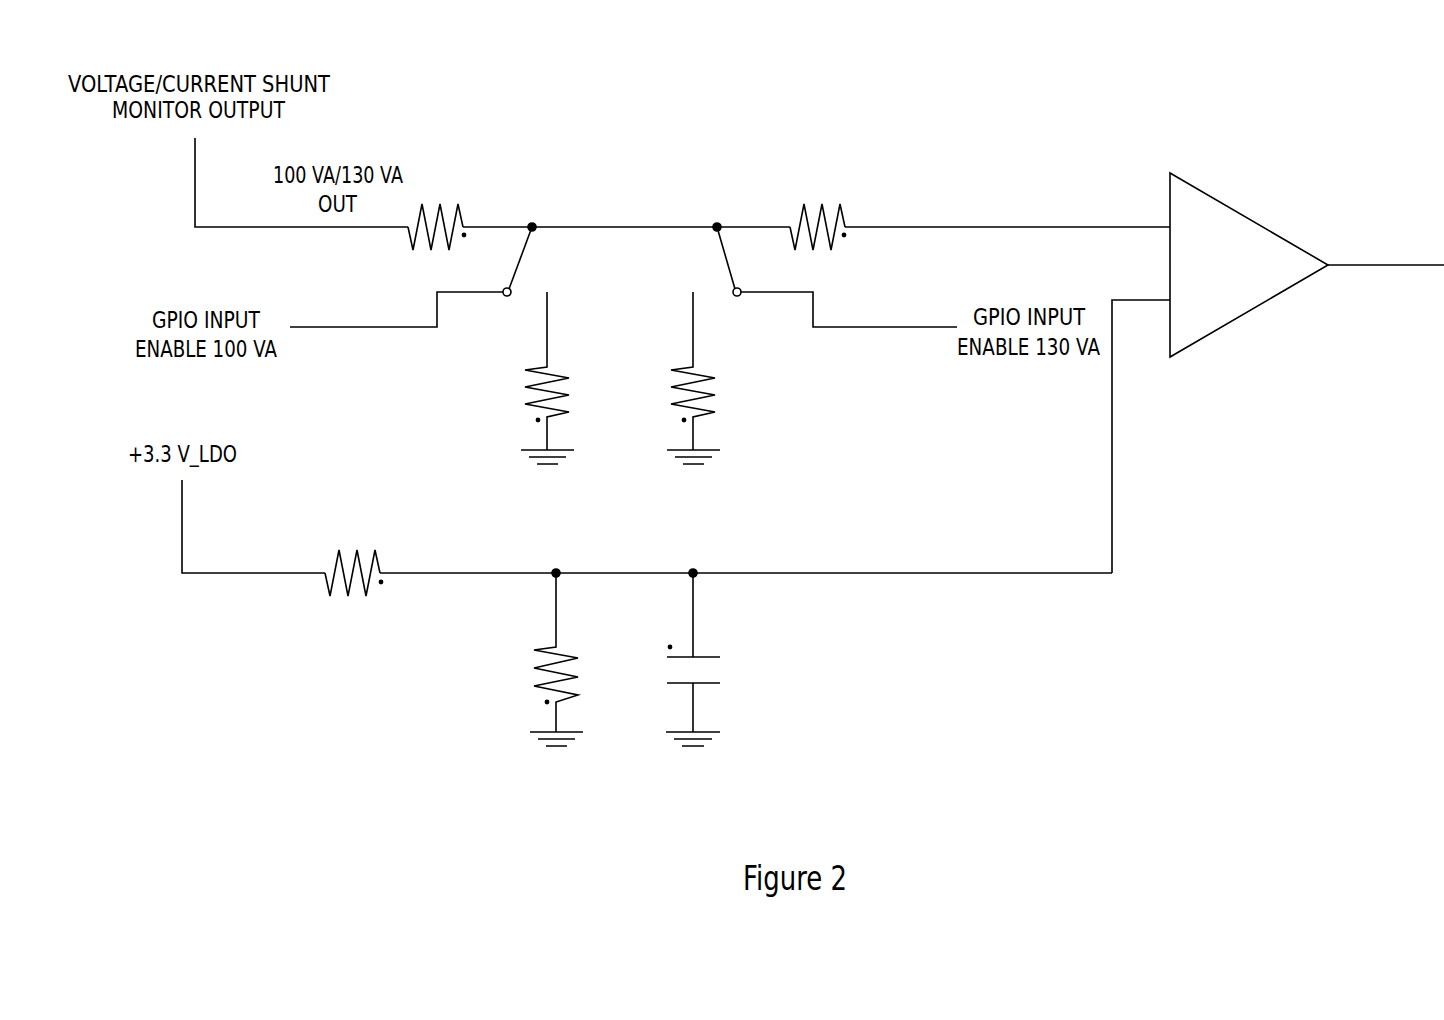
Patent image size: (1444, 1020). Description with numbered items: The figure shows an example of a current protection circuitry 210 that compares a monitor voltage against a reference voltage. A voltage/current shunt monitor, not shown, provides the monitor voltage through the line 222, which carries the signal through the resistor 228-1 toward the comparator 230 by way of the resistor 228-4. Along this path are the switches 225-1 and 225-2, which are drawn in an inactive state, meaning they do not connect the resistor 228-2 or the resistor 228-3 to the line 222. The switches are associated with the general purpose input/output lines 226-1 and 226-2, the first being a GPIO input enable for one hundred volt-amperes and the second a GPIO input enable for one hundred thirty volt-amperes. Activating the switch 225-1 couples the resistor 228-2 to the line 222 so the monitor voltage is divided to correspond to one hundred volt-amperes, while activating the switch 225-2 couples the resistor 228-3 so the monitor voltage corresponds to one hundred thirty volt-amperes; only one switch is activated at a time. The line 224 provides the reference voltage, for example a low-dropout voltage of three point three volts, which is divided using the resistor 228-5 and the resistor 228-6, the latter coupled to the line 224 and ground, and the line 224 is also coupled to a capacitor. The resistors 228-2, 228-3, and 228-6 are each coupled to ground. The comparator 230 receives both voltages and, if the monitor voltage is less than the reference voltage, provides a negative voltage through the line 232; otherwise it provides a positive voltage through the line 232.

The current protection circuitry 210 is at (1270, 58).
The line 222 is at (195, 194).
The line 224 is at (182, 540).
The switch 225-1 is at (512, 273).
The switch 225-2 is at (733, 275).
The general purpose input/output (GPIO) line 226-1 is at (360, 327).
The GPIO line 226-2 is at (877, 327).
The resistor 228-1 is at (462, 218).
The resistor 228-2 is at (533, 402).
The resistor 228-3 is at (705, 414).
The resistor 228-4 is at (846, 220).
The resistor 228-5 is at (378, 563).
The resistor 228-6 is at (543, 685).
The comparator 230 is at (1230, 208).
The line 232 is at (1358, 265).